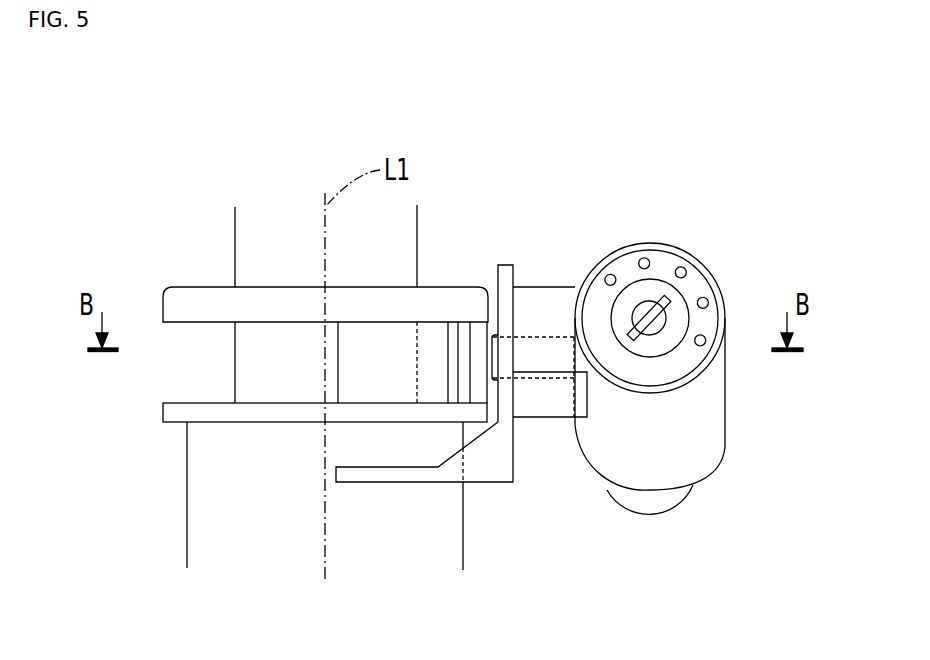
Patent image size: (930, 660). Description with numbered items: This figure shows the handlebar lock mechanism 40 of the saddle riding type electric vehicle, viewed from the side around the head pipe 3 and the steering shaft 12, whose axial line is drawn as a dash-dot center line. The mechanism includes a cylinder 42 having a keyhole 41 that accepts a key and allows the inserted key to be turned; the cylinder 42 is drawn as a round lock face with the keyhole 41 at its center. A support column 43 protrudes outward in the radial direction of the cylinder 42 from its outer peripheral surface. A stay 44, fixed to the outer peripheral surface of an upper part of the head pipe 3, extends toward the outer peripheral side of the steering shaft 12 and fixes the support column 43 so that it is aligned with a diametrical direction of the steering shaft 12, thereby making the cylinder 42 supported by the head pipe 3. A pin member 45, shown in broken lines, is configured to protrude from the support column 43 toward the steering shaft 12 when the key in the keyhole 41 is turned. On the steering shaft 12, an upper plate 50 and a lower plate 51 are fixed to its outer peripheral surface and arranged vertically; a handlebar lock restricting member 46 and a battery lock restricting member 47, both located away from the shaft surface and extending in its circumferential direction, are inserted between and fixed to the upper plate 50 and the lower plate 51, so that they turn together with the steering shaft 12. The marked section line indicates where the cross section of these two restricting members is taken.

The head pipe 3 is at (187, 495).
The steering shaft 12 is at (234, 230).
The handlebar lock mechanism 40 is at (690, 194).
The keyhole 41 is at (655, 300).
The cylinder 42 is at (713, 448).
The support column 43 is at (542, 407).
The stay 44 is at (483, 472).
The pin member 45 is at (535, 337).
The handlebar lock restricting member 46 is at (479, 330).
The battery lock restricting member 47 is at (366, 386).
The upper plate 50 is at (282, 298).
The lower plate 51 is at (208, 408).